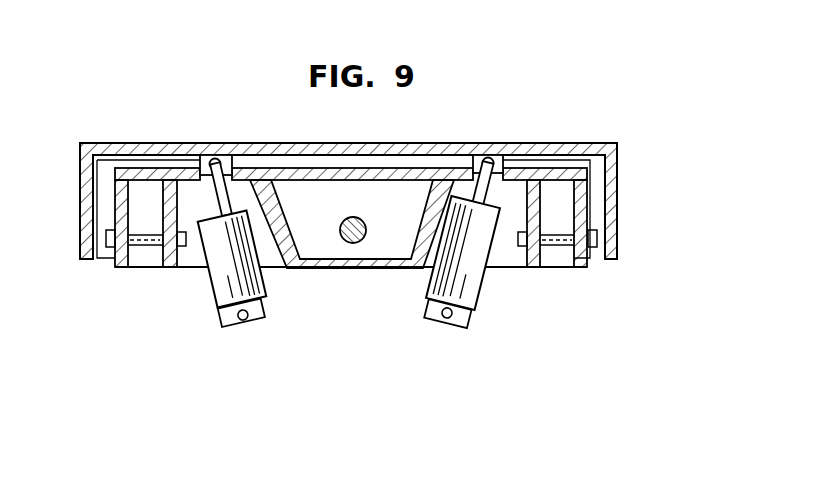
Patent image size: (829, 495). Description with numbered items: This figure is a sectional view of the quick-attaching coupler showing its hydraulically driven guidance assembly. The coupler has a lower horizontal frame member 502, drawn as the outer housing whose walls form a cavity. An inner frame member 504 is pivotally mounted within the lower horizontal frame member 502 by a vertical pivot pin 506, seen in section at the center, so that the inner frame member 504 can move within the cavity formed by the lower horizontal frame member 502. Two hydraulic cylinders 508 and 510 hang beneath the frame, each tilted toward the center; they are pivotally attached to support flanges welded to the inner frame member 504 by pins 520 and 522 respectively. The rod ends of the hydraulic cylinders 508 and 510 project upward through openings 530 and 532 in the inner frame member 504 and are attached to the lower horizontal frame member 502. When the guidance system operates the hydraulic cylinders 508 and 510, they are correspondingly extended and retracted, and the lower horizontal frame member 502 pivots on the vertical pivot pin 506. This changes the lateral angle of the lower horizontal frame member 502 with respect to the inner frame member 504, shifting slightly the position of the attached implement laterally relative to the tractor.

The lower horizontal frame member 502 is at (618, 193).
The inner frame member 504 is at (567, 268).
The vertical pivot pin 506 is at (361, 220).
The hydraulic cylinder 508 is at (254, 288).
The hydraulic cylinder 510 is at (463, 288).
The pin 520 is at (245, 327).
The pin 522 is at (450, 327).
The opening 530 is at (243, 153).
The opening 532 is at (512, 177).